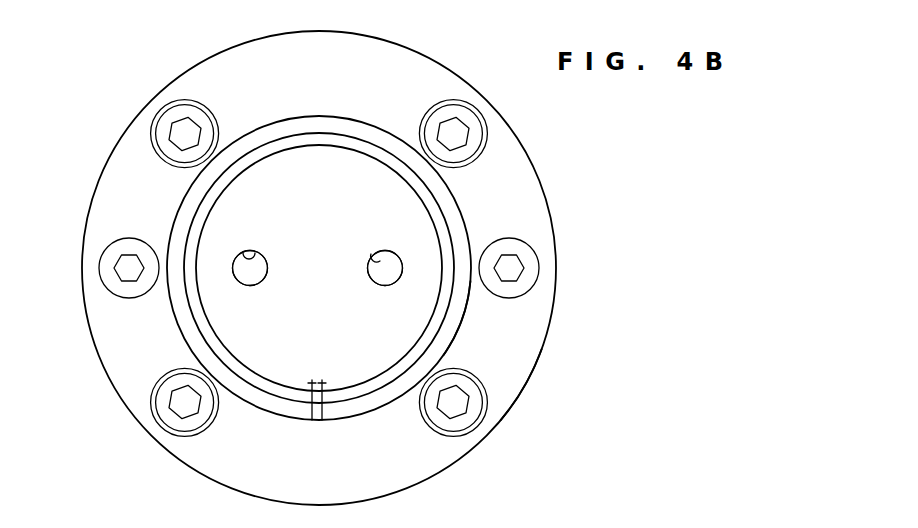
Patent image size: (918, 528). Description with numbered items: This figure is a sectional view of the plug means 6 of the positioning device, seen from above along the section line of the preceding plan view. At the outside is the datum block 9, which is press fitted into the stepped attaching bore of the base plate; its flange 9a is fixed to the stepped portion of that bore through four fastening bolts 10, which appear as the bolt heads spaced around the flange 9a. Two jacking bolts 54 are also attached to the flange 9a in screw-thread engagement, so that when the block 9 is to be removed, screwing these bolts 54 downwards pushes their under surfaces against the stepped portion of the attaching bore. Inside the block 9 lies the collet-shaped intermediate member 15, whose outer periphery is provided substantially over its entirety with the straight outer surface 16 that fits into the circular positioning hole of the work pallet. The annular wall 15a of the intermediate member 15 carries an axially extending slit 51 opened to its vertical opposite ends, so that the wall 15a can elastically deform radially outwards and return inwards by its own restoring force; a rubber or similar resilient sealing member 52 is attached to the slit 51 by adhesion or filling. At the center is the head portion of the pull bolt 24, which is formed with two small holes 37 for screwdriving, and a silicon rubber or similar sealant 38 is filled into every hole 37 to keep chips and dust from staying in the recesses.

The plug means 6 is at (583, 222).
The datum block 9 is at (548, 340).
The flange 9a is at (520, 373).
The fastening bolts 10 is at (163, 120).
The intermediate member 15 is at (462, 213).
The annular wall 15a is at (183, 208).
The straight outer surface 16 is at (465, 318).
The pull bolt 24 is at (352, 150).
The small holes 37 is at (256, 250).
The sealant 38 is at (255, 280).
The slit 51 is at (312, 420).
The resilient sealing member 52 is at (323, 410).
The jacking bolts 54 is at (528, 277).